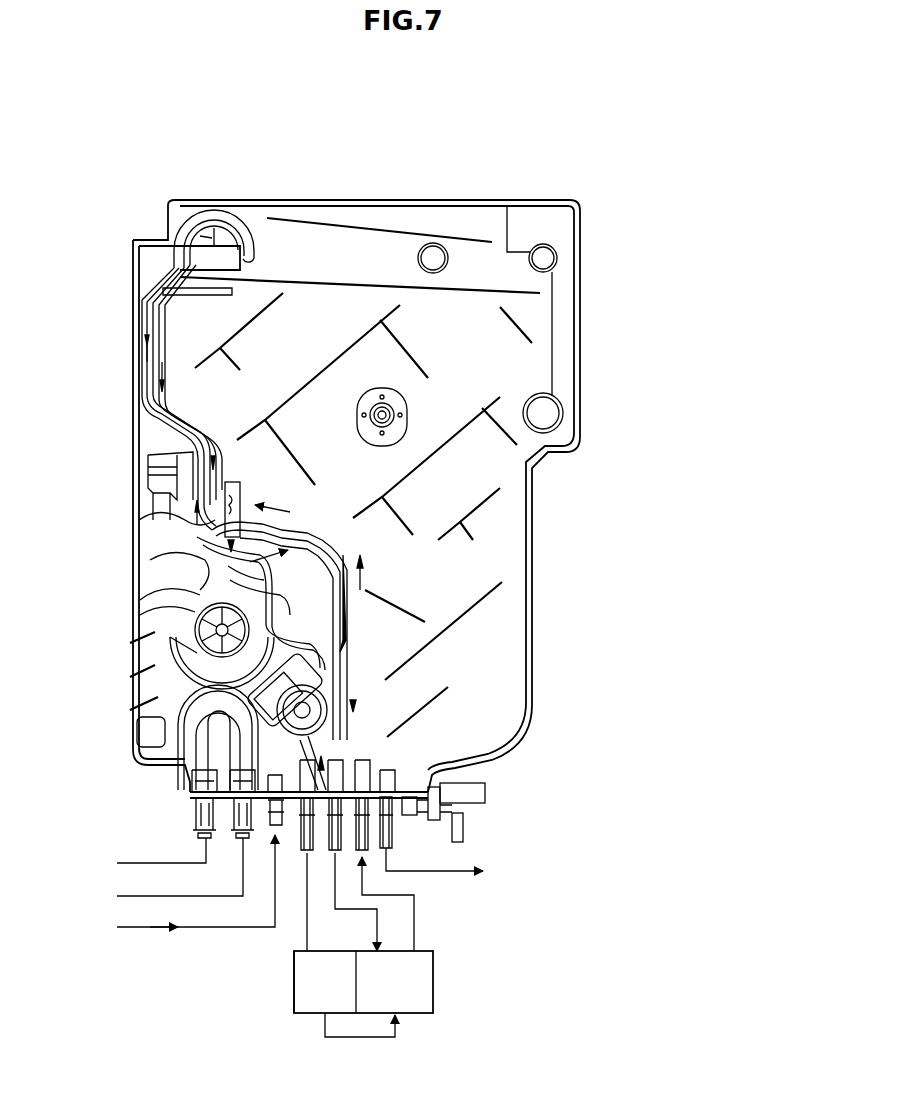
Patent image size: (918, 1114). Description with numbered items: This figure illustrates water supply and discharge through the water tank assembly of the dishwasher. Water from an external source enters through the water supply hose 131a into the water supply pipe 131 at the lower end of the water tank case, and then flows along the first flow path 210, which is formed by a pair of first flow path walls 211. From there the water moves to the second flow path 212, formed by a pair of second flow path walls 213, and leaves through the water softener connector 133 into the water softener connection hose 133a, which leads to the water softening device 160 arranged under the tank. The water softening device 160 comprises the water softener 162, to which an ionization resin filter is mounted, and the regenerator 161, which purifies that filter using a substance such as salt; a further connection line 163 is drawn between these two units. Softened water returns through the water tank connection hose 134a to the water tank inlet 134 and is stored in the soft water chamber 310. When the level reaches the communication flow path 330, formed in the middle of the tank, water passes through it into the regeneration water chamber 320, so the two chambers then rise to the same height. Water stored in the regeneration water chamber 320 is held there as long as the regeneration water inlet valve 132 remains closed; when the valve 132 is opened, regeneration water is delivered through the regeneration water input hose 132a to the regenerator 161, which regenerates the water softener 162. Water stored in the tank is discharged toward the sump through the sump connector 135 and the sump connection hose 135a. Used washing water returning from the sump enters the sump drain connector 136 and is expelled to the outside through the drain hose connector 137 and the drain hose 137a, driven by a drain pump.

The first flow path wall 211 is at (165, 290).
The first flow path 210 is at (148, 318).
The second flow path 212 is at (160, 352).
The second flow path wall 213 is at (190, 425).
The communication flow path 330 is at (228, 510).
The soft water chamber 310 is at (394, 479).
The regeneration water chamber 320 is at (336, 606).
The drain hose connector 137 is at (195, 808).
The drain hose 137a is at (117, 863).
The sump drain connector 136 is at (243, 838).
The water supply pipe 131 is at (268, 830).
The water supply hose 131a is at (128, 930).
The regeneration water inlet valve 132 is at (305, 850).
The regeneration water input hose 132a is at (307, 937).
The water softener connector 133 is at (335, 850).
The water softener connection hose 133a is at (377, 918).
The water tank inlet 134 is at (366, 851).
The water tank connection hose 134a is at (414, 915).
The sump connector 135 is at (390, 848).
The sump connection hose 135a is at (470, 873).
The water softening device 160 is at (403, 982).
The regenerator 161 is at (319, 982).
The water softener 162 is at (385, 982).
The connection line 163 is at (395, 1037).